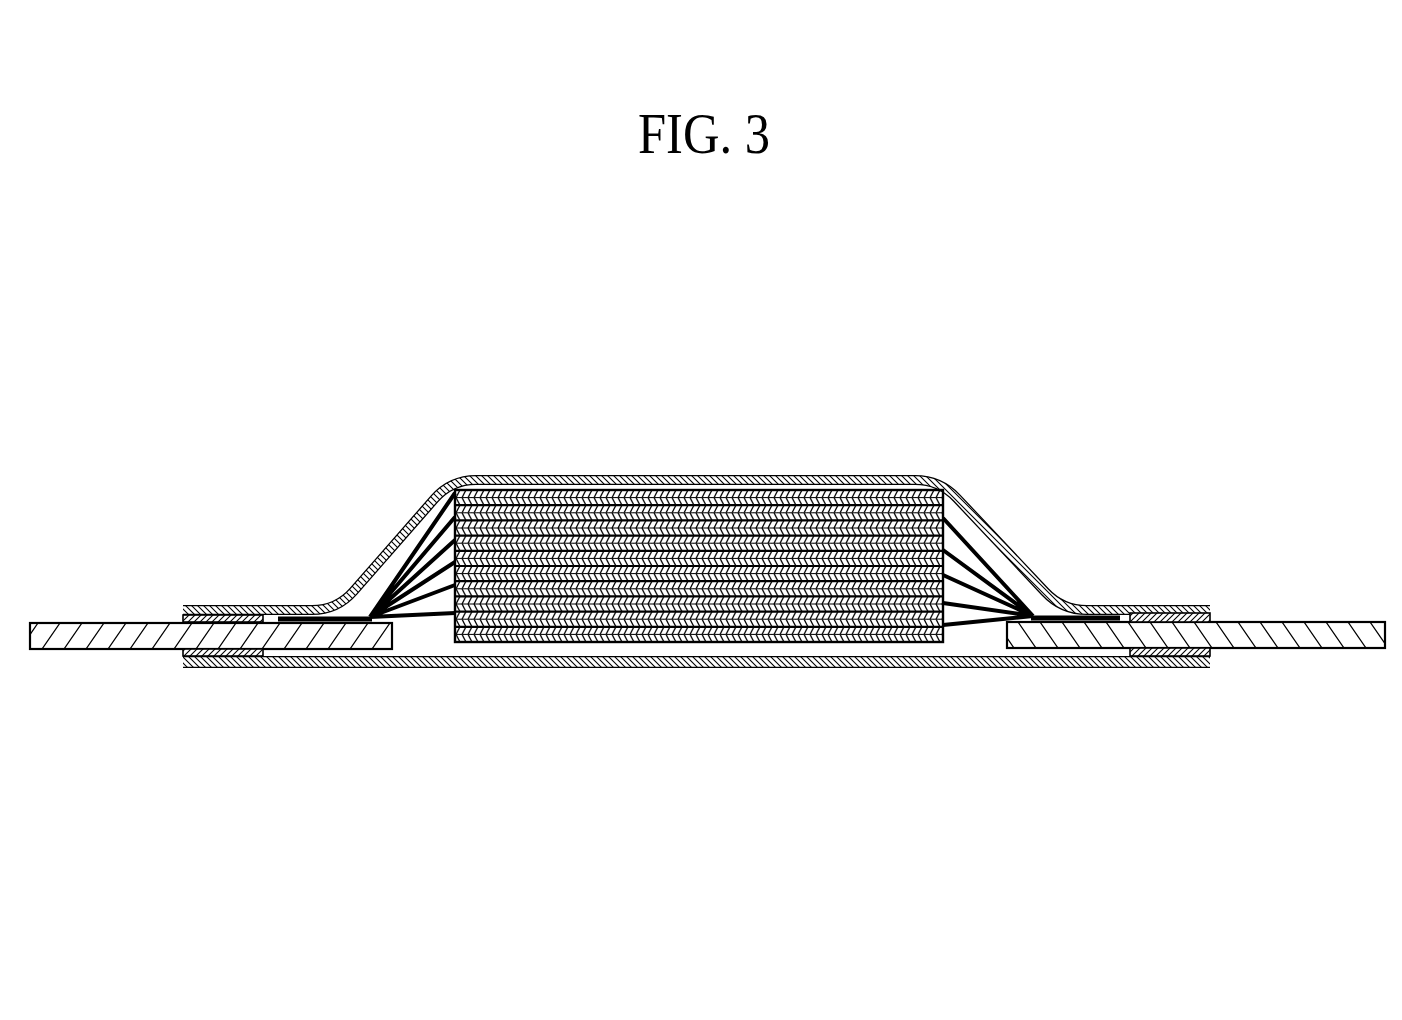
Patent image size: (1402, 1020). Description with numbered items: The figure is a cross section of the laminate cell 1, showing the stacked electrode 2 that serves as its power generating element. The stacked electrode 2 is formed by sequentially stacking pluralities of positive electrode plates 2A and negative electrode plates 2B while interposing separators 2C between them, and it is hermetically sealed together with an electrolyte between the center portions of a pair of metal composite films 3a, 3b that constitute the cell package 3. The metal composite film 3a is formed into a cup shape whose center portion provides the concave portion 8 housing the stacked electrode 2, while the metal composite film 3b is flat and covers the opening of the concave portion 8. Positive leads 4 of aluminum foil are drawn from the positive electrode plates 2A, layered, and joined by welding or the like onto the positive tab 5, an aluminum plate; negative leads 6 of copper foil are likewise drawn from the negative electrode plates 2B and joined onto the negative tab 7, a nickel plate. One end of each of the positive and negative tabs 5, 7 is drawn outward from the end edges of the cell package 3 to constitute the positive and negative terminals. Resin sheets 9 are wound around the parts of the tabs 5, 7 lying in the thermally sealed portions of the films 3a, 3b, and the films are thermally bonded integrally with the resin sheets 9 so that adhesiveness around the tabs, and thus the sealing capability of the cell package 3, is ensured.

The laminate cell 1 is at (1047, 352).
The stacked electrode 2 is at (543, 487).
The positive electrode plates 2A is at (622, 527).
The negative electrode plates 2B is at (893, 527).
The separators 2C is at (814, 525).
The cell package 3 is at (345, 585).
The metal composite film 3a is at (487, 476).
The metal composite film 3b is at (620, 669).
The positive leads 4 is at (440, 545).
The positive tab 5 is at (119, 622).
The negative leads 6 is at (980, 590).
The negative tab 7 is at (1309, 621).
The concave portion 8 is at (858, 522).
The resin sheets 9 is at (210, 605).